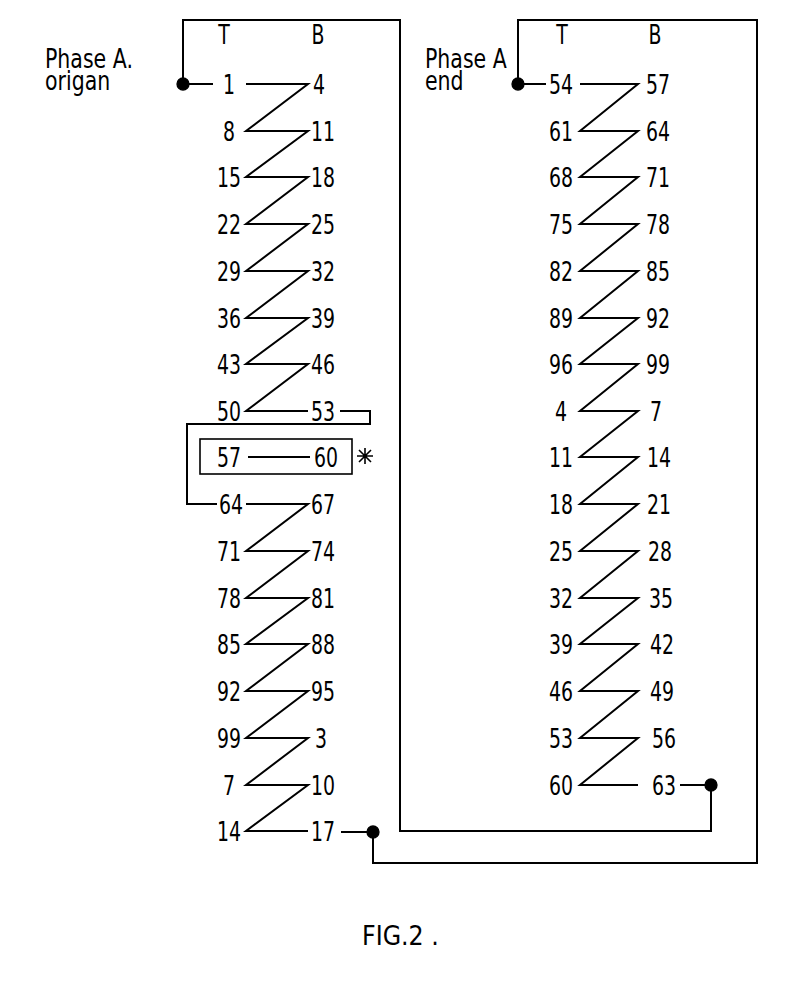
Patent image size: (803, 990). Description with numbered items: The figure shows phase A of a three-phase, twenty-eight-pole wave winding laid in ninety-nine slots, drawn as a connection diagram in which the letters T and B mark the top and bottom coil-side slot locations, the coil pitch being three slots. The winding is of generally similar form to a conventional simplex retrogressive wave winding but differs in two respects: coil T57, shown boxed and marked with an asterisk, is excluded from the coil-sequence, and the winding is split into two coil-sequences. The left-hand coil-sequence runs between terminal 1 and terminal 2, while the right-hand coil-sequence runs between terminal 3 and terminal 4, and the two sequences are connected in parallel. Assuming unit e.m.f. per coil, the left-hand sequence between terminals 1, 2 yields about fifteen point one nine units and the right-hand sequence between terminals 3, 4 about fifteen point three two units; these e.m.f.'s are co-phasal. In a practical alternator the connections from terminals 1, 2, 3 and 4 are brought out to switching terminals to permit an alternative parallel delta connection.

The terminal 1 is at (183, 84).
The terminal 2 is at (373, 832).
The terminal 3 is at (711, 785).
The terminal 4 is at (518, 84).